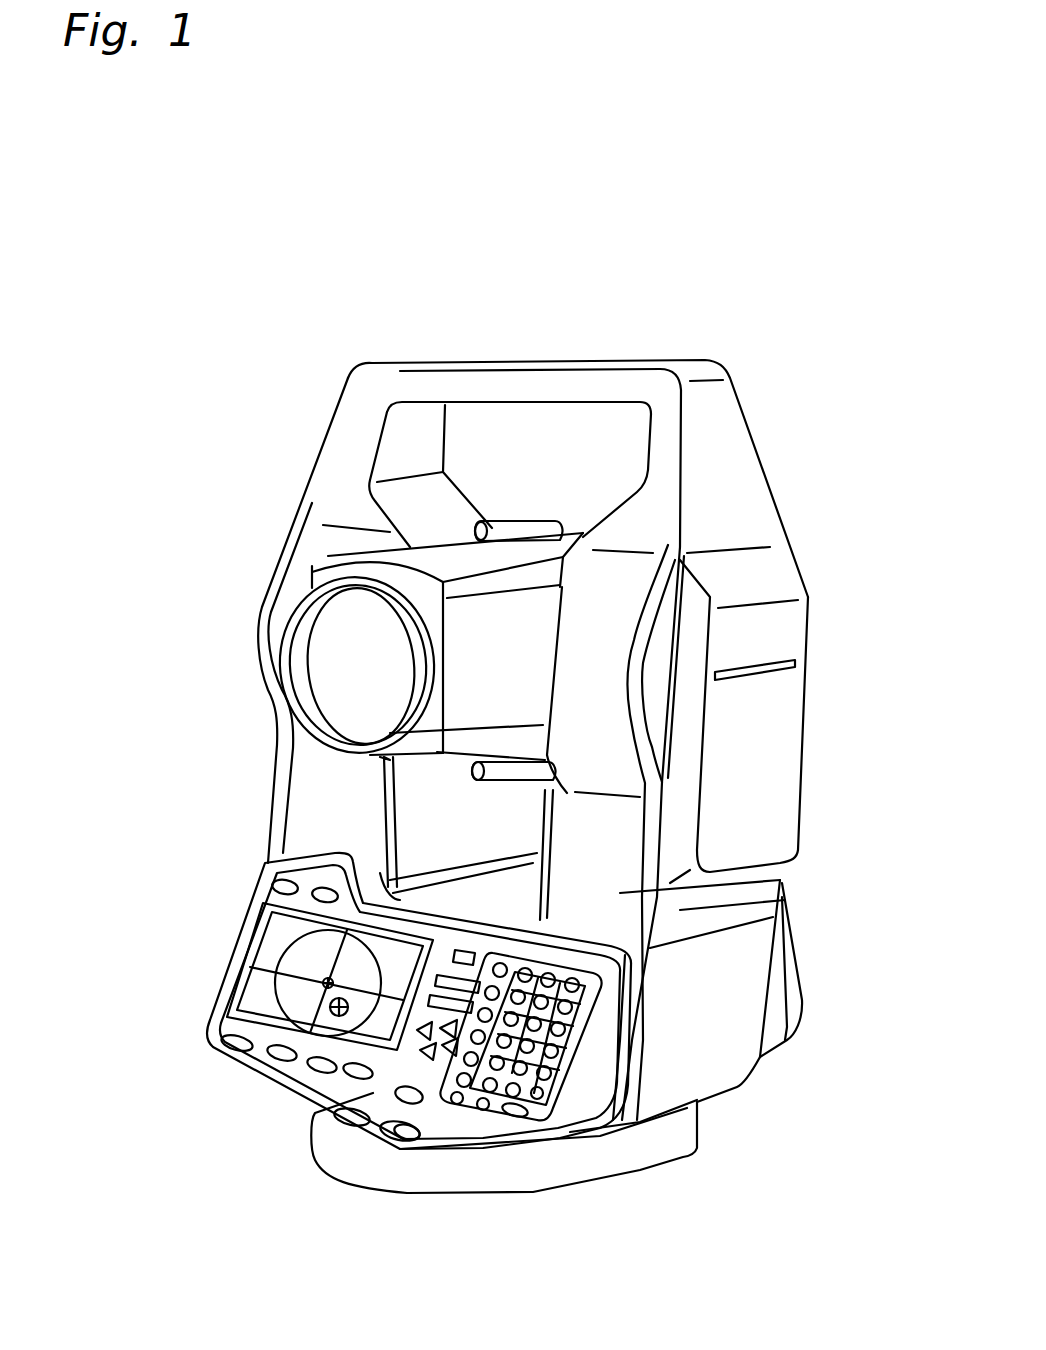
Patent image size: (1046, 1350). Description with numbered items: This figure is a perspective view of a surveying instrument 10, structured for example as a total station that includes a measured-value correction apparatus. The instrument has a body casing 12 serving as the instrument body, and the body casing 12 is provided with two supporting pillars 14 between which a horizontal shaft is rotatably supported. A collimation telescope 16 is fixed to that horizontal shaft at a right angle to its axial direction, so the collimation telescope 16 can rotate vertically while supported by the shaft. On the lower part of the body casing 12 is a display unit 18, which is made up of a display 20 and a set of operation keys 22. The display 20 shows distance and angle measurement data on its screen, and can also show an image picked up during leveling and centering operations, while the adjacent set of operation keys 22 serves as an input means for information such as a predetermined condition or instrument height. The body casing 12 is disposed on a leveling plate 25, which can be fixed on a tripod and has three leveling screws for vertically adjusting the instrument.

The surveying instrument 10 is at (290, 516).
The body casing 12 is at (795, 633).
The supporting pillars 14 is at (300, 800).
The collimation telescope 16 is at (312, 574).
The display unit 18 is at (523, 1240).
The display 20 is at (300, 1017).
The set of operation keys 22 is at (493, 1110).
The leveling plate 25 is at (690, 1128).